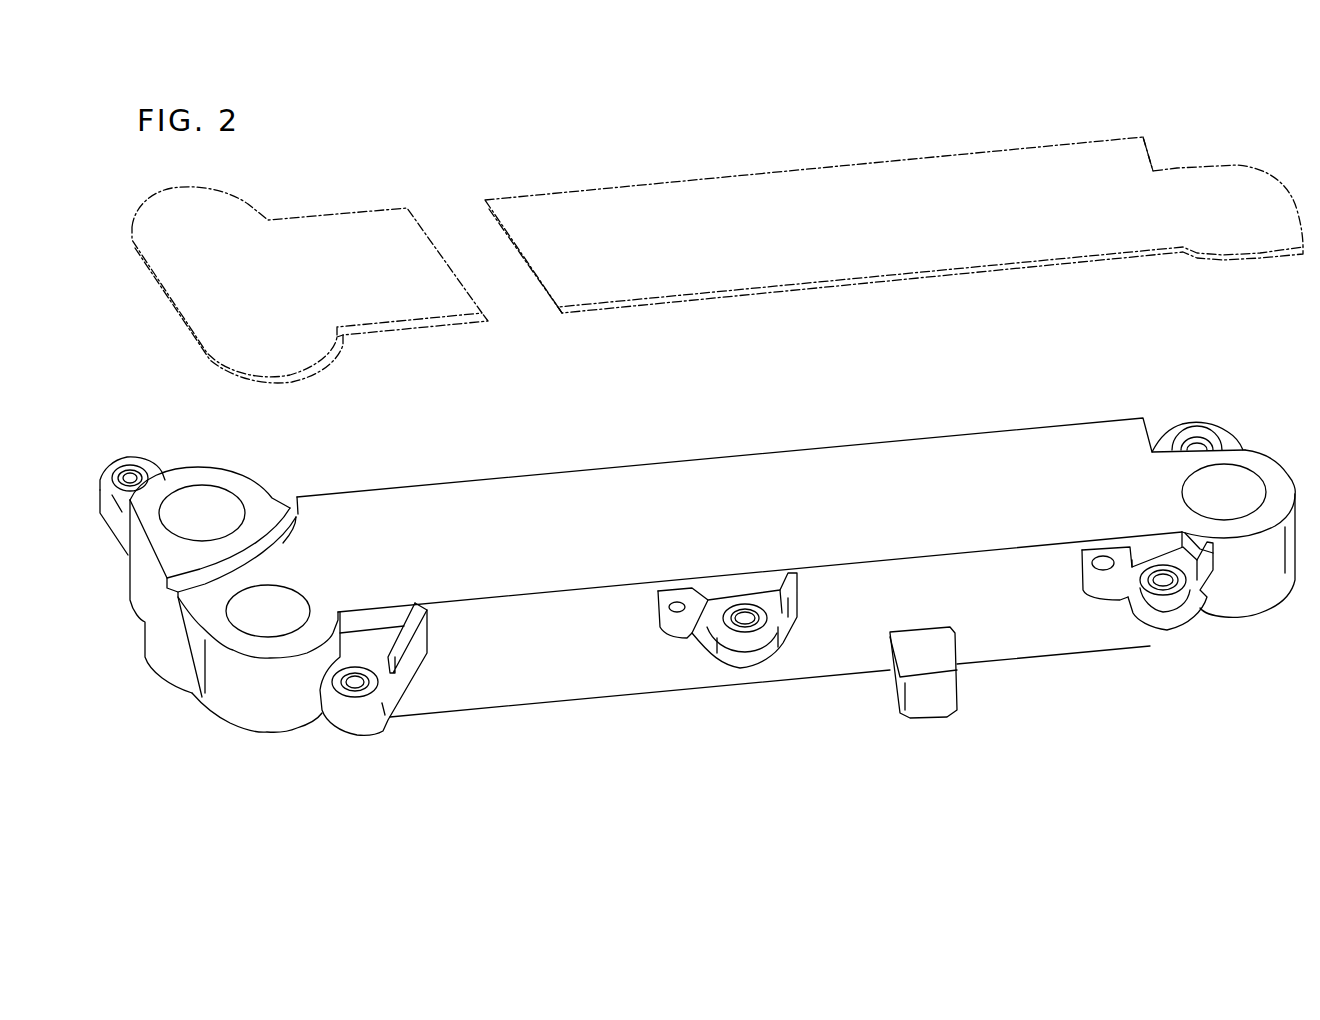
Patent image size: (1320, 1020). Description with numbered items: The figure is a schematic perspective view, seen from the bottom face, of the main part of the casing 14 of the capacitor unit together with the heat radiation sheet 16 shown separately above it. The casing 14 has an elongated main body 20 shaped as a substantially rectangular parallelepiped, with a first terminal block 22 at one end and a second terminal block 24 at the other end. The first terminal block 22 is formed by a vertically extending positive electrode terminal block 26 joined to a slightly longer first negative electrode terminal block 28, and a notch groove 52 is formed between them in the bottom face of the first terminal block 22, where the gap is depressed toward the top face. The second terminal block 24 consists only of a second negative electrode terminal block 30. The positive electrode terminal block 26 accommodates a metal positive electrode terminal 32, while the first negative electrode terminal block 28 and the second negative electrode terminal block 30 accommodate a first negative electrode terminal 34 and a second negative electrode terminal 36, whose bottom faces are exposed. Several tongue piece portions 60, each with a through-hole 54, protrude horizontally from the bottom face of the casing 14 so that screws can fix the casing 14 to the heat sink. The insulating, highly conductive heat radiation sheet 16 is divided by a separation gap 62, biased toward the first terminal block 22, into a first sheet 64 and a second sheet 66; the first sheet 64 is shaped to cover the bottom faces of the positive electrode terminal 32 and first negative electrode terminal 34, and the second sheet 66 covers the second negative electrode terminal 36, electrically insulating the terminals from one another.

The casing 14 is at (695, 571).
The heat radiation sheet 16 is at (894, 217).
The main body 20 is at (892, 452).
The first terminal block 22 is at (178, 648).
The second terminal block 24 is at (1275, 473).
The positive electrode terminal block 26 is at (260, 723).
The first negative electrode terminal block 28 is at (138, 580).
The second negative electrode terminal block 30 is at (1262, 597).
The positive electrode terminal 32 is at (292, 586).
The first negative electrode terminal 34 is at (212, 498).
The second negative electrode terminal 36 is at (1247, 482).
The notch groove 52 is at (288, 513).
The through-hole 54 is at (137, 477).
The tongue piece portion 60 is at (112, 467).
The separation gap 62 is at (552, 305).
The first sheet 64 is at (362, 214).
The second sheet 66 is at (542, 199).